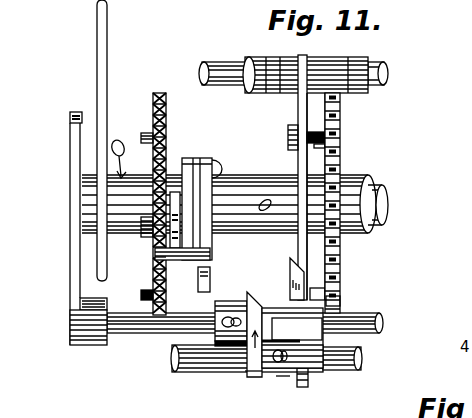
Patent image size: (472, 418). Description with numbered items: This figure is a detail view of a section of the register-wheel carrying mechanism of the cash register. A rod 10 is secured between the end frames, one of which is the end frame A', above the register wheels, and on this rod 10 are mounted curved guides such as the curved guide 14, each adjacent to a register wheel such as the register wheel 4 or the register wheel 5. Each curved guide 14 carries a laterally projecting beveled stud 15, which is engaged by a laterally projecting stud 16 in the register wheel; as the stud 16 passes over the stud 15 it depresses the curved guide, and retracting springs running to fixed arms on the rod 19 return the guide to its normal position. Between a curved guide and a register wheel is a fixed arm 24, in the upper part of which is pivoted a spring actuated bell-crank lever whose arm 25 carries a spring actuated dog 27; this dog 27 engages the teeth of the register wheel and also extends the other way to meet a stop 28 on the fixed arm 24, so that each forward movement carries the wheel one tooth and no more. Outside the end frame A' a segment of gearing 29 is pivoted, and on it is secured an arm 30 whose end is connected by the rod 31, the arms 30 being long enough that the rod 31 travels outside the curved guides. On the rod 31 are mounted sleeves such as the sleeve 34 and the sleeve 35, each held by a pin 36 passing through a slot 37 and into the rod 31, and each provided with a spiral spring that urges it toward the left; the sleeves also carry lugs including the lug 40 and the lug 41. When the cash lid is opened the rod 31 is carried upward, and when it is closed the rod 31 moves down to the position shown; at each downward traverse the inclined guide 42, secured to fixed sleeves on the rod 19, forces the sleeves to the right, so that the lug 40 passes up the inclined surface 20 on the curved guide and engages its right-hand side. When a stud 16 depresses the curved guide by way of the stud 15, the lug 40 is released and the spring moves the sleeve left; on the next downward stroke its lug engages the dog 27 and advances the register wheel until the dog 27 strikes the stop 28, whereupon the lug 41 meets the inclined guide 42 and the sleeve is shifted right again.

The rod 10 is at (264, 50).
The curved guide 14 is at (293, 115).
The beveled stud 15 is at (317, 124).
The stud 16 is at (322, 146).
The register wheel 4 is at (346, 152).
The register wheel 5 is at (167, 128).
The end frame A' is at (85, 140).
The segment of gearing 29 is at (64, 121).
The arm 30 is at (64, 269).
The arm of bell-crank lever 25 is at (178, 190).
The fixed arm 24 is at (217, 252).
The stop 28 is at (198, 287).
The spring actuated dog 27 is at (158, 257).
The rod 31 is at (146, 341).
The rod 19 is at (198, 362).
The pin 36 is at (222, 301).
The sleeve 34 is at (215, 304).
The slot 37 is at (236, 320).
The sleeve 35 is at (292, 338).
The inclined surface 20 is at (290, 282).
The lug 40 is at (341, 293).
The inclined guide 42 is at (245, 370).
The lug 41 is at (279, 376).